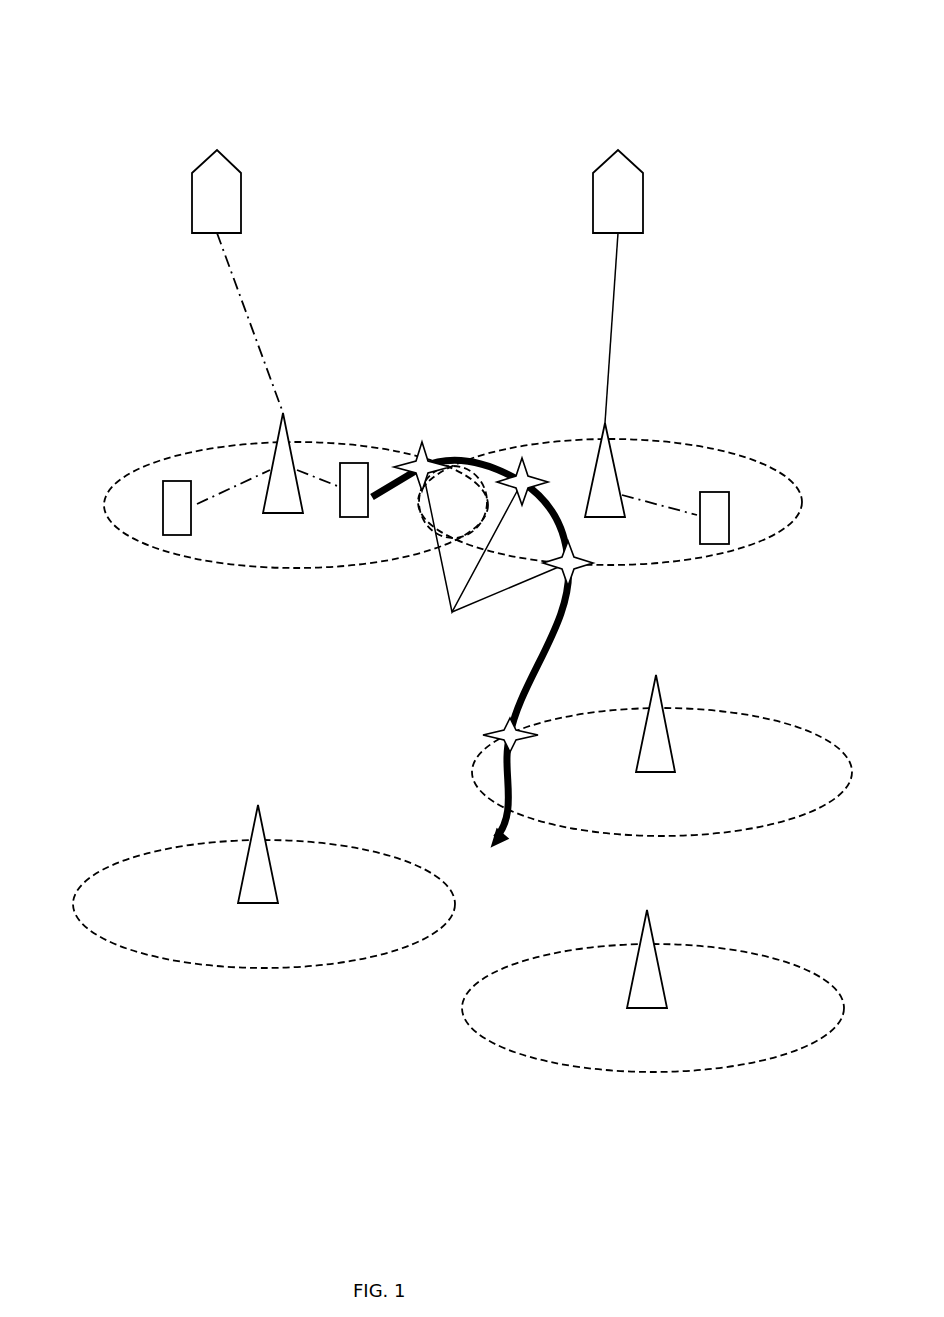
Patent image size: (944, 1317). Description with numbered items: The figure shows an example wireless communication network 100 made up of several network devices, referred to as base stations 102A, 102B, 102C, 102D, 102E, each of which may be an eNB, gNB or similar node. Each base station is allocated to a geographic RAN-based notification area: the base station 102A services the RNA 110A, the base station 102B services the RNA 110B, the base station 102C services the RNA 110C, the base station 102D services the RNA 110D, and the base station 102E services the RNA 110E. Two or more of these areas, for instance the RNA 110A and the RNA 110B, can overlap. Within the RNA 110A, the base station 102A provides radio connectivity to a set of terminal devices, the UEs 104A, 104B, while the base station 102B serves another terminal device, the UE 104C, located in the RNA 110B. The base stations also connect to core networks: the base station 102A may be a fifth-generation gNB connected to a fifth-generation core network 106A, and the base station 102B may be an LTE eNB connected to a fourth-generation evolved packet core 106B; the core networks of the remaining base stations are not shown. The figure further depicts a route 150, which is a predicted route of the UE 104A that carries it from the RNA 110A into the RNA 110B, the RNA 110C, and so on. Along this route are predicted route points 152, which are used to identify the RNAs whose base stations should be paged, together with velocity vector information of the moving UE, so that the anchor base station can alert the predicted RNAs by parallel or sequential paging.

The wireless communication network 100 is at (155, 100).
The base station 102A is at (277, 438).
The base station 102B is at (613, 448).
The base station 102C is at (663, 727).
The base station 102D is at (640, 932).
The base station 102E is at (252, 828).
The UE 104A is at (360, 463).
The UE 104B is at (191, 523).
The UE 104C is at (730, 515).
The core network 106A is at (235, 168).
The core network 106B is at (632, 162).
The RNA 110A is at (162, 552).
The RNA 110B is at (793, 515).
The RNA 110C is at (620, 830).
The RNA 110D is at (722, 945).
The RNA 110E is at (223, 962).
The route 150 is at (558, 632).
The predicted route points 152 is at (483, 545).